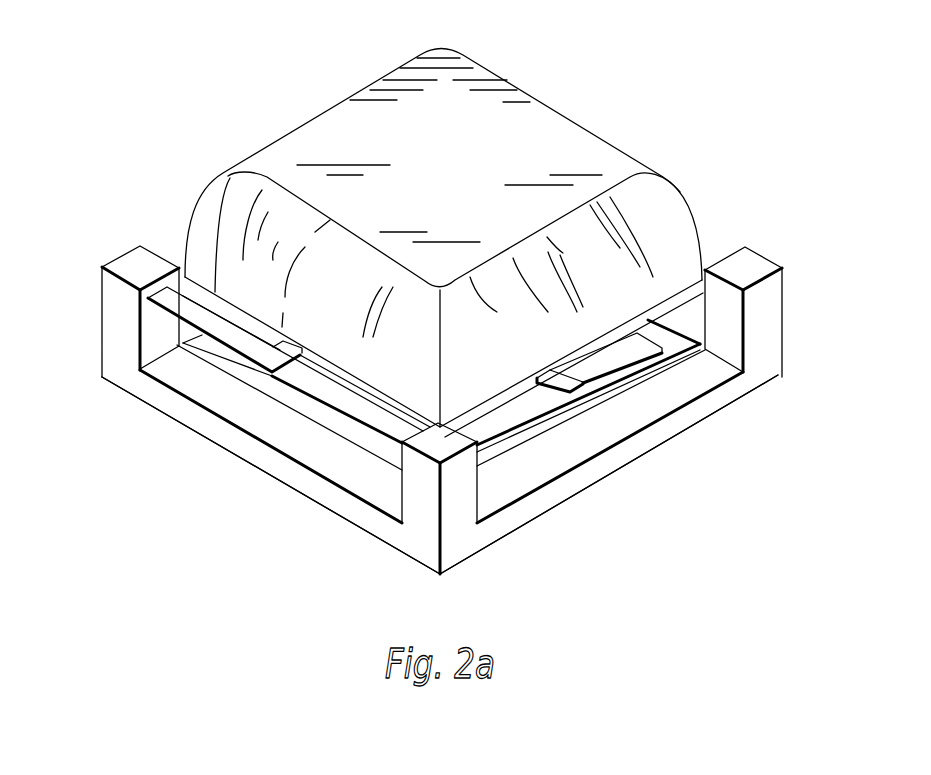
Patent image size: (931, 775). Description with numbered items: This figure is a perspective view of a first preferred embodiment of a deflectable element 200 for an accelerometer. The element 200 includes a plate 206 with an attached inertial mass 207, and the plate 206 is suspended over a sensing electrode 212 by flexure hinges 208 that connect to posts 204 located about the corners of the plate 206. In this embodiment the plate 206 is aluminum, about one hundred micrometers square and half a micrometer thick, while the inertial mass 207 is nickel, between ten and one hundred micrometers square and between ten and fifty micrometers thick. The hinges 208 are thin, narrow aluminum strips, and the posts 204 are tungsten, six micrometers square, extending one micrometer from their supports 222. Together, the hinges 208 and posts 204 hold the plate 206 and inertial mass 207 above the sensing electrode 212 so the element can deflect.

The deflectable element 200 is at (582, 70).
The post 204 is at (100, 317).
The plate 206 is at (186, 291).
The inertial mass 207 is at (471, 207).
The flexure hinge 208 is at (195, 322).
The sensing electrode 212 is at (352, 408).
The support 222 is at (553, 459).